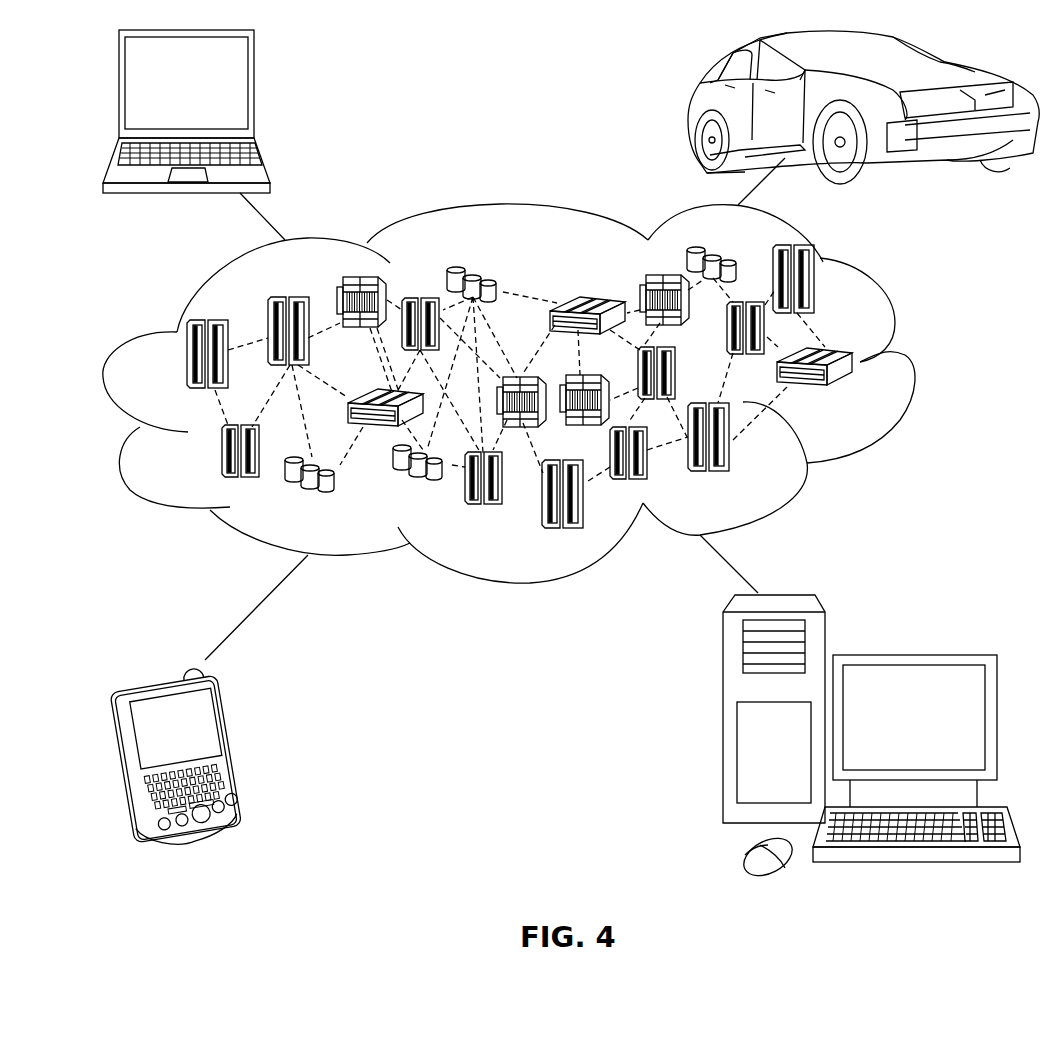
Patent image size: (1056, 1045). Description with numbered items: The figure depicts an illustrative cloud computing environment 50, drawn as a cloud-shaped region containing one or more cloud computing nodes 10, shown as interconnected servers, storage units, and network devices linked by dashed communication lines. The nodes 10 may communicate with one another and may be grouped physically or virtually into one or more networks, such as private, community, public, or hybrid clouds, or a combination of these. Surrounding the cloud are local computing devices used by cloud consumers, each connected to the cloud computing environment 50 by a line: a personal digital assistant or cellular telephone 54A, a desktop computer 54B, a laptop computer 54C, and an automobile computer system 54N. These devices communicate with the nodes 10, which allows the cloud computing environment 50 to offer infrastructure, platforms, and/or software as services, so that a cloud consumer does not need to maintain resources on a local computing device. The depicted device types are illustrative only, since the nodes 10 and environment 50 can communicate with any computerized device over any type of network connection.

The cloud computing node 10 is at (852, 394).
The cloud computing environment 50 is at (912, 367).
The personal digital assistant or cellular telephone 54A is at (246, 745).
The desktop computer 54B is at (910, 653).
The laptop computer 54C is at (258, 90).
The automobile computer system 54N is at (693, 106).